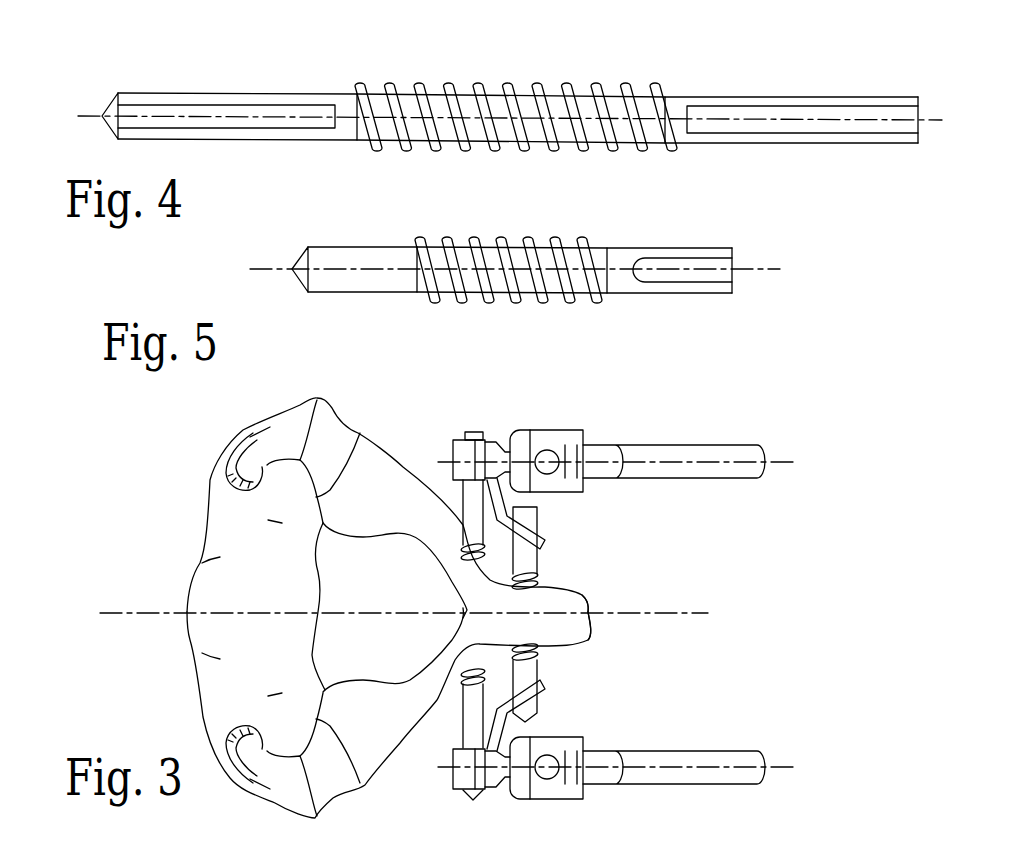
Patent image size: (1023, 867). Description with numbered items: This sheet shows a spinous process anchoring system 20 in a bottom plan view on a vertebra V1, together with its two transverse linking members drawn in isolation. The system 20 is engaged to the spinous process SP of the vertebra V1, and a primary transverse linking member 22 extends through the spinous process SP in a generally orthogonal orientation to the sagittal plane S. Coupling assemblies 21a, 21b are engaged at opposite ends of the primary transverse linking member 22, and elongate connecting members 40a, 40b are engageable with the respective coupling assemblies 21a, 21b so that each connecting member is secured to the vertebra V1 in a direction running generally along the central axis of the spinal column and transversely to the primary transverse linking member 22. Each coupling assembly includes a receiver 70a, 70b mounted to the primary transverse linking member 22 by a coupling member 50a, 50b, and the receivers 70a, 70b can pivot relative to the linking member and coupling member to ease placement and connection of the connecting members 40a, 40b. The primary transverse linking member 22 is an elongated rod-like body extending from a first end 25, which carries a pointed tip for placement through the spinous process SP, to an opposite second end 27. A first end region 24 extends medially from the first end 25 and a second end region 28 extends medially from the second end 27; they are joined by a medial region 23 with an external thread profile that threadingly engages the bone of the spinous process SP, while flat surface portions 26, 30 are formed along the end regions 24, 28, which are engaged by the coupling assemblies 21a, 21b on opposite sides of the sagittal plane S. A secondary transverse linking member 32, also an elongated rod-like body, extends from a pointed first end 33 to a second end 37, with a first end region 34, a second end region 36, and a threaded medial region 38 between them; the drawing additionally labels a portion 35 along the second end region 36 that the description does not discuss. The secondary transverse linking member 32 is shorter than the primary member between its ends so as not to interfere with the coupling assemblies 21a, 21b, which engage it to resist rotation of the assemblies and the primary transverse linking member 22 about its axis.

In FIG. 3, the spinous process anchoring system 20 is at (573, 593).
In FIG. 3, the coupling assembly 21a is at (533, 446).
In FIG. 3, the coupling assembly 21b is at (542, 762).
In FIG. 4, the primary transverse linking member 22 is at (515, 87).
In FIG. 3, the primary transverse linking member 22 is at (455, 505).
In FIG. 4, the medial region 23 is at (511, 87).
In FIG. 4, the first end region 24 is at (157, 93).
In FIG. 4, the first end 25 is at (102, 116).
In FIG. 4, the flat surface portion 26 is at (262, 118).
In FIG. 4, the second end 27 is at (918, 98).
In FIG. 4, the second end region 28 is at (760, 97).
In FIG. 4, the flat surface portion 30 is at (815, 120).
In FIG. 5, the secondary transverse linking member 32 is at (510, 258).
In FIG. 3, the secondary transverse linking member 32 is at (552, 521).
In FIG. 5, the first end 33 is at (292, 269).
In FIG. 5, the first end region 34 is at (332, 247).
In FIG. 5, the slot 35 is at (665, 283).
In FIG. 5, the second end region 36 is at (632, 248).
In FIG. 5, the second end 37 is at (735, 256).
In FIG. 5, the medial region 38 is at (498, 240).
In FIG. 3, the elongate connecting member 40a is at (700, 432).
In FIG. 3, the elongate connecting member 40b is at (700, 742).
In FIG. 3, the coupling member 50a is at (425, 440).
In FIG. 3, the coupling member 50b is at (450, 773).
In FIG. 3, the receiver 70a is at (556, 425).
In FIG. 3, the receiver 70b is at (540, 810).
In FIG. 3, the sagittal plane S is at (663, 612).
In FIG. 3, the spinous process SP is at (588, 626).
In FIG. 3, the vertebra V1 is at (203, 655).